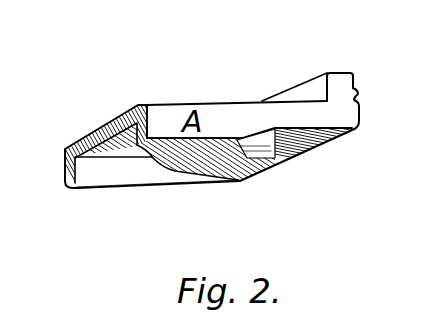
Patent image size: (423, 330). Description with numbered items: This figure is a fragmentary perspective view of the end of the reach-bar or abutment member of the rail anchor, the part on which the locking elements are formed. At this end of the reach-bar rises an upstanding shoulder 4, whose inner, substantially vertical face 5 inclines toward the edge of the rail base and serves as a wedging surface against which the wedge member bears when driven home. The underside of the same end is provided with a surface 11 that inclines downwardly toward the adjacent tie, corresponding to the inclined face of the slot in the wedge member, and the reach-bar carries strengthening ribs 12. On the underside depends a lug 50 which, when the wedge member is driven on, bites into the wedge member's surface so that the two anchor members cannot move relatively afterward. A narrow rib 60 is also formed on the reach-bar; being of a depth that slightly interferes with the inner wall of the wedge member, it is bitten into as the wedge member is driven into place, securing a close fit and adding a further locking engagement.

The upstanding shoulder 4 is at (343, 88).
The inner vertical face 5 is at (313, 92).
The inclined surface 11 is at (292, 145).
The strengthening ribs 12 is at (62, 184).
The depending lug 50 is at (197, 172).
The narrow rib 60 is at (367, 98).